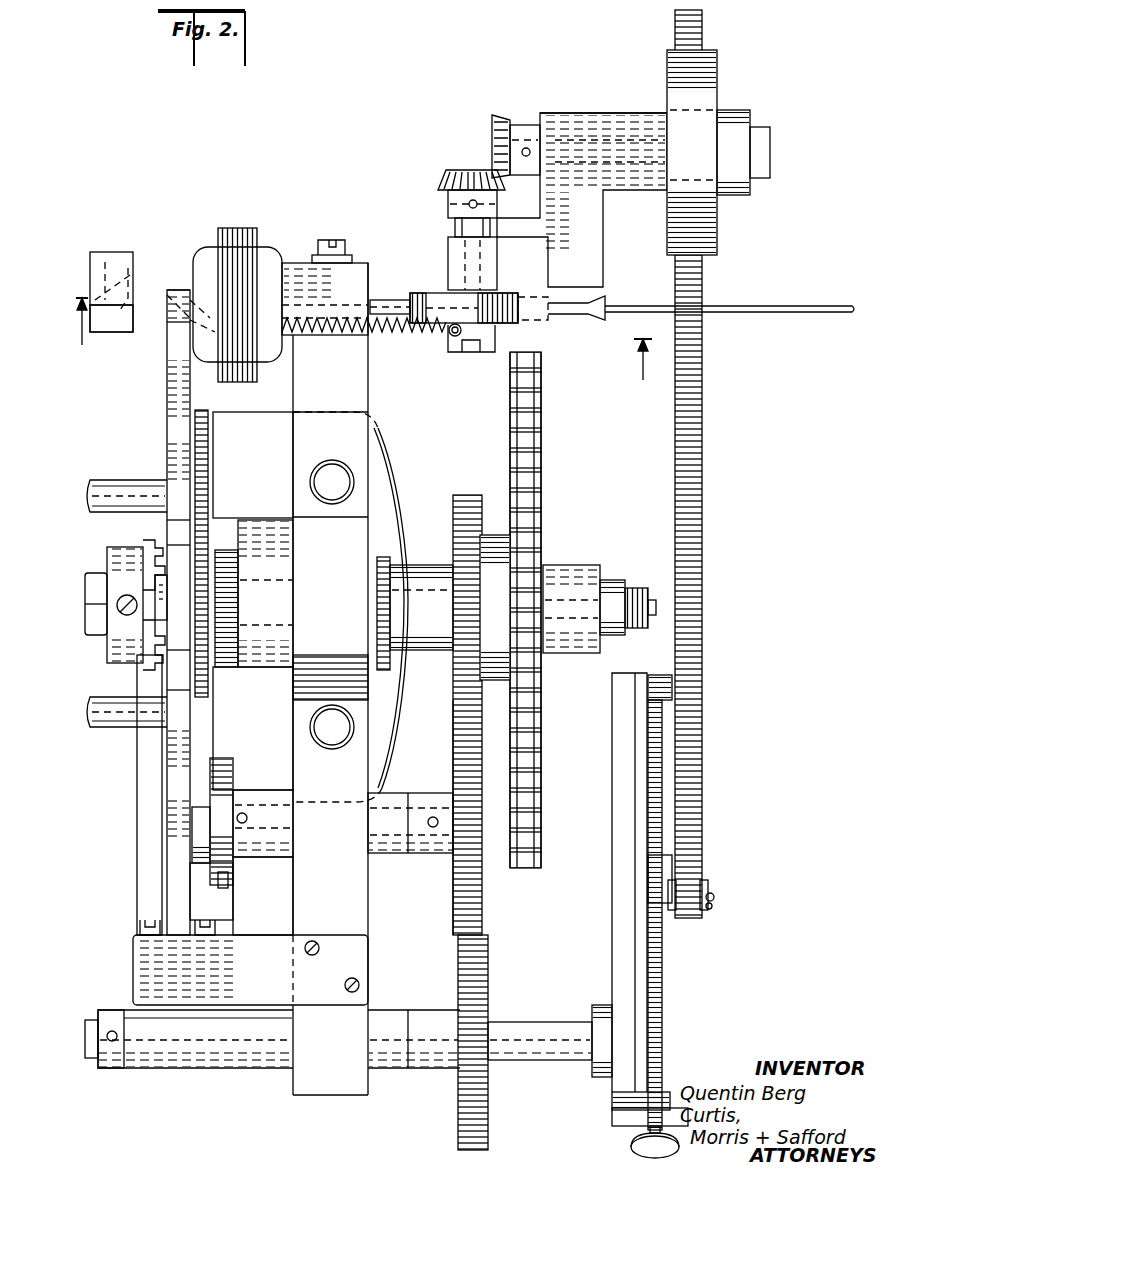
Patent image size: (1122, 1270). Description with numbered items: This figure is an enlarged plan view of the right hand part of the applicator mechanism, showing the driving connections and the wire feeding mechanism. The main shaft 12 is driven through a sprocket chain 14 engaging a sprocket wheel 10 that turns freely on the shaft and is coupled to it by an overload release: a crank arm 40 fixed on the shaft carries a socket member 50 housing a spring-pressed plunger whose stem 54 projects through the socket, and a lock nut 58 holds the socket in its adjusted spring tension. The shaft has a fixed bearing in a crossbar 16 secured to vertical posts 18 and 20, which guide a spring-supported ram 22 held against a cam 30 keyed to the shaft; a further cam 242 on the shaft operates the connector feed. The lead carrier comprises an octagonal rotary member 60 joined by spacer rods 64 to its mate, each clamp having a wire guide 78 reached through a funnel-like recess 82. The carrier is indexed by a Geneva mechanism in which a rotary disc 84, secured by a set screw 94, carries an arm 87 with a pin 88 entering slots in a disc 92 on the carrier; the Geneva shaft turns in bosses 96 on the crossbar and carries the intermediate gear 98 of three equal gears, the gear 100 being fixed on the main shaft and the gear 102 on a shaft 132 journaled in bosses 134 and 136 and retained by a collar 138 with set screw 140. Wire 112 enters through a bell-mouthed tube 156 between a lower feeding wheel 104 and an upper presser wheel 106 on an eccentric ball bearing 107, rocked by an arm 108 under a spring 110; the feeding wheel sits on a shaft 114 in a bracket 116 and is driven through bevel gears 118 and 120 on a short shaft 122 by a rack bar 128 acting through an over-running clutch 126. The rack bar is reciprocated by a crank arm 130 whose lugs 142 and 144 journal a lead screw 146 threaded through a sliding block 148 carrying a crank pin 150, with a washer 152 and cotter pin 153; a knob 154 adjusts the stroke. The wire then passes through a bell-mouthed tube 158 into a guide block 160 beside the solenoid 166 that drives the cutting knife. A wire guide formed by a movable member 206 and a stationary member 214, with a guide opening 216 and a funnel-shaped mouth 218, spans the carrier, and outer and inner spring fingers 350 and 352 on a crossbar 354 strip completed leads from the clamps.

The sprocket wheel 10 is at (536, 505).
The main shaft 12 is at (96, 580).
The sprocket chain 14 is at (556, 440).
The crossbar 16 is at (355, 898).
The vertical post 18 is at (330, 462).
The vertical post 20 is at (332, 745).
The movable crossbar or ram 22 is at (392, 465).
The cam 30 is at (262, 522).
The crank arm 40 is at (570, 580).
The socket member 50 is at (640, 596).
The stem 54 is at (652, 611).
The lock nut 58 is at (612, 590).
The rotary member 60 is at (176, 521).
The spacer rods 64 is at (113, 488).
The wire guide 78 is at (166, 318).
The funnel-like recess 82 is at (178, 292).
The rotary disc 84 is at (226, 764).
The arm 87 is at (224, 882).
The pin 88 is at (200, 840).
The disc 92 is at (206, 480).
The set screw 94 is at (243, 812).
The bosses 96 is at (280, 842).
The intermediate gear 98 is at (466, 756).
The gear 100 is at (466, 505).
The gear 102 is at (470, 986).
The lower feeding wheel 104 is at (380, 302).
The upper idler or presser wheel 106 is at (440, 296).
The eccentrically mounted ball bearing 107 is at (468, 350).
The arm 108 is at (448, 334).
The spring 110 is at (342, 336).
The wire 112 is at (786, 309).
The shaft 114 is at (460, 256).
The bracket 116 is at (596, 240).
The bevel gear 118 is at (450, 176).
The bevel gear 120 is at (496, 126).
The short shaft 122 is at (614, 120).
The over-running clutch 126 is at (742, 116).
The rack bar 128 is at (703, 460).
The crank arm 130 is at (622, 768).
The shaft 132 is at (515, 1050).
The boss 134 is at (395, 1070).
The boss 136 is at (230, 1050).
The collar 138 is at (115, 1060).
The set screw 140 is at (110, 1026).
The lug 142 is at (614, 1112).
The lug 144 is at (660, 680).
The lead screw 146 is at (664, 1016).
The block 148 is at (650, 885).
The crank pin 150 is at (714, 896).
The washer 152 is at (705, 884).
The cotter pin 153 is at (712, 906).
The knob 154 is at (640, 1148).
The tube 156 is at (577, 314).
The bell-mouthed tube 158 is at (370, 303).
The guide block 160 is at (295, 268).
The solenoid 166 is at (228, 242).
The movable member of the wire guide 206 is at (112, 332).
The stationary member 214 is at (106, 262).
The guide opening 216 is at (110, 281).
The funnel-shaped mouth 218 is at (132, 272).
The cam 242 is at (386, 590).
The outer spring fingers 350 is at (212, 900).
The inner spring fingers 352 is at (147, 880).
The crossbar 354 is at (160, 958).